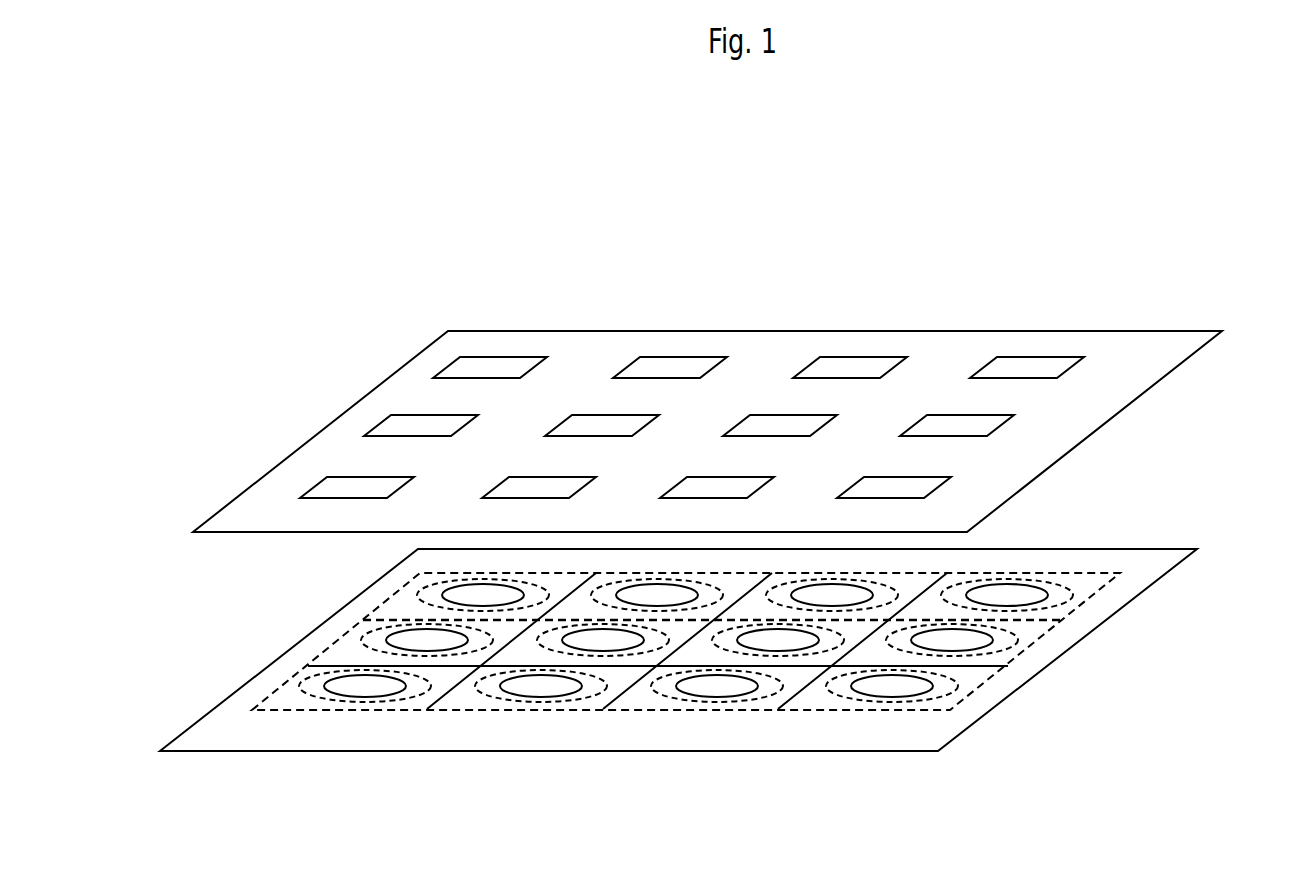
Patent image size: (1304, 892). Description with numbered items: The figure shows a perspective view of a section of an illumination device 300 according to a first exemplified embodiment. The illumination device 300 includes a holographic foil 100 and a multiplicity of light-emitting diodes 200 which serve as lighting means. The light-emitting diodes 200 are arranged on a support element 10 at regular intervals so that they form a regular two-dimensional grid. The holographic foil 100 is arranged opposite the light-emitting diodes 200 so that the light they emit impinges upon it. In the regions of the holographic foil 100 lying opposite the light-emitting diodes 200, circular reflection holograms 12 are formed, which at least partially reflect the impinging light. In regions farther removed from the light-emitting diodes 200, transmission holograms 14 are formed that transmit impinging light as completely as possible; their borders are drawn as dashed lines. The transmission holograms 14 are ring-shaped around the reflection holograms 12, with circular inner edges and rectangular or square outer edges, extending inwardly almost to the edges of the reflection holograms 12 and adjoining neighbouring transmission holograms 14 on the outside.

The illumination device 300 is at (327, 147).
The support element 10 is at (1113, 425).
The light-emitting diodes 200 is at (1020, 365).
The holographic foil 100 is at (1065, 663).
The reflection holograms 12 is at (717, 683).
The transmission holograms 14 is at (645, 695).